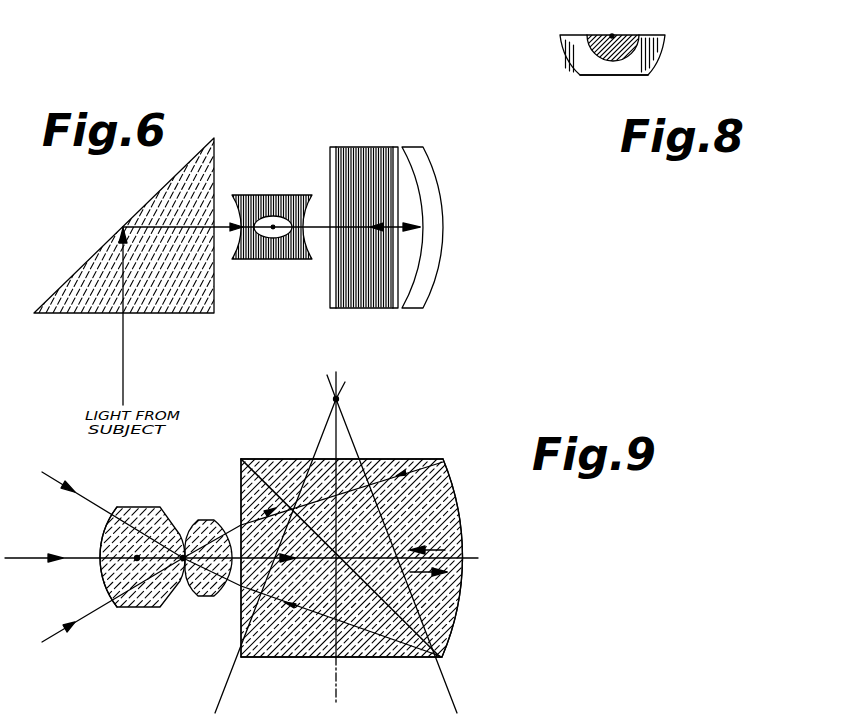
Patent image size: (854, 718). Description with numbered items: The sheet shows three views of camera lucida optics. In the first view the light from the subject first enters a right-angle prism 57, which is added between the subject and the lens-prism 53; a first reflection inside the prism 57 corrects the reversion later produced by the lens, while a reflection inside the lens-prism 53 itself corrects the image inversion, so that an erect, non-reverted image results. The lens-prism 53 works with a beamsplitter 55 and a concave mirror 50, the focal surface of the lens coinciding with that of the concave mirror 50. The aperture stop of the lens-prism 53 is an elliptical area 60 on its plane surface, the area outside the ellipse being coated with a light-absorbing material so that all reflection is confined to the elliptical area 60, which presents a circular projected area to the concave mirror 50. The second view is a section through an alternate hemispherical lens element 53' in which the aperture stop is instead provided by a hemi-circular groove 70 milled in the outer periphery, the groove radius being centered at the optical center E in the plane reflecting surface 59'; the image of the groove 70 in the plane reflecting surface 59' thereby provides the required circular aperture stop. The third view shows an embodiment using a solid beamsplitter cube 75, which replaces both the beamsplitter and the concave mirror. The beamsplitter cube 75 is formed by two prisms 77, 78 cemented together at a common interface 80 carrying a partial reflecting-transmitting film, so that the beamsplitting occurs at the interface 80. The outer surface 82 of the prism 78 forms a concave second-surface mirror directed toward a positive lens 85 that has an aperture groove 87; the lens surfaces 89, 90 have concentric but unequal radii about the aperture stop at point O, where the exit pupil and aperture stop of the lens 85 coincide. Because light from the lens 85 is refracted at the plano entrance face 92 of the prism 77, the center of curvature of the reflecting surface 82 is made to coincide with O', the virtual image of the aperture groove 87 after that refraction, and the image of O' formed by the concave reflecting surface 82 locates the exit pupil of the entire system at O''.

In FIG. 6, the right-angle prism 57 is at (160, 192).
In FIG. 6, the lens-prism 53 is at (274, 247).
In FIG. 6, the elliptical area 60 is at (275, 239).
In FIG. 6, the optical center E is at (274, 226).
In FIG. 8, the optical center E is at (613, 35).
In FIG. 6, the beamsplitter 55 is at (370, 148).
In FIG. 6, the concave mirror 50 is at (432, 207).
In FIG. 8, the hemispherical lens element 53' is at (632, 55).
In FIG. 8, the plane reflecting surface 59' is at (633, 38).
In FIG. 8, the hemi-circular groove 70 is at (582, 60).
In FIG. 9, the common interface 80 is at (358, 576).
In FIG. 9, the prism 78 is at (446, 518).
In FIG. 9, the outer surface 82 is at (462, 560).
In FIG. 9, the solid beamsplitter cube 75 is at (284, 448).
In FIG. 9, the prism 77 is at (302, 657).
In FIG. 9, the plano entrance face 92 is at (240, 632).
In FIG. 9, the lens 85 is at (137, 504).
In FIG. 9, the aperture groove 87 is at (180, 537).
In FIG. 9, the lens surface 89 is at (102, 531).
In FIG. 9, the virtual image of the aperture stop O' is at (96, 574).
In FIG. 9, the point O is at (183, 588).
In FIG. 9, the exit pupil of the entire optical system O'' is at (336, 542).
In FIG. 9, the lens surface 90 is at (238, 546).